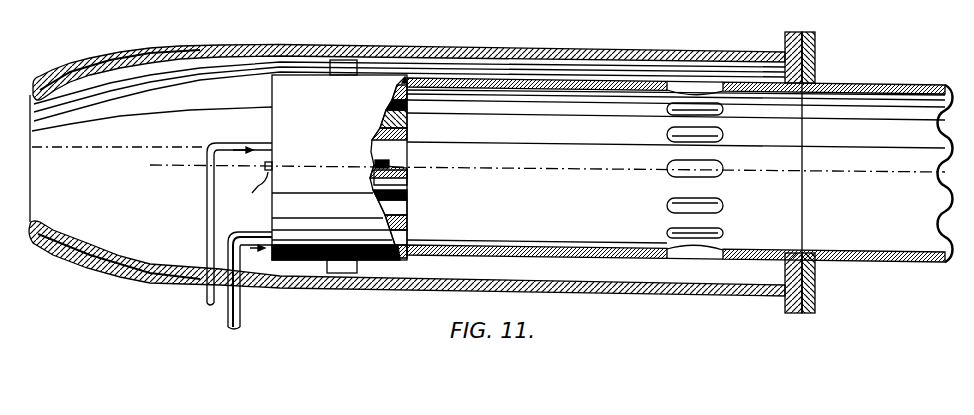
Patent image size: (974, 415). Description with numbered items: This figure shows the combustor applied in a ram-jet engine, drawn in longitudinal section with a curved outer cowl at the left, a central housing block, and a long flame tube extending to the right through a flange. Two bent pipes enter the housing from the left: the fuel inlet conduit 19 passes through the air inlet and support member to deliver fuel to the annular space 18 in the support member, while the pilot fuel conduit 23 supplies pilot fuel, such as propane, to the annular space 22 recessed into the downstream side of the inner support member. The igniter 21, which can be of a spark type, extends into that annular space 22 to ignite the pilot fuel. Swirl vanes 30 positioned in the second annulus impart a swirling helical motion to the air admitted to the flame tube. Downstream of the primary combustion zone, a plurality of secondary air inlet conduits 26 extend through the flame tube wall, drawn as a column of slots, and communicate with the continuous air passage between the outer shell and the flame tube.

The annular space 18 is at (407, 240).
The fuel inlet conduit 19 is at (261, 237).
The igniter 21 is at (392, 163).
The annular space 22 is at (403, 177).
The pilot fuel conduit 23 is at (212, 165).
The secondary air inlet conduits 26 is at (713, 176).
The swirl vanes 30 is at (403, 207).